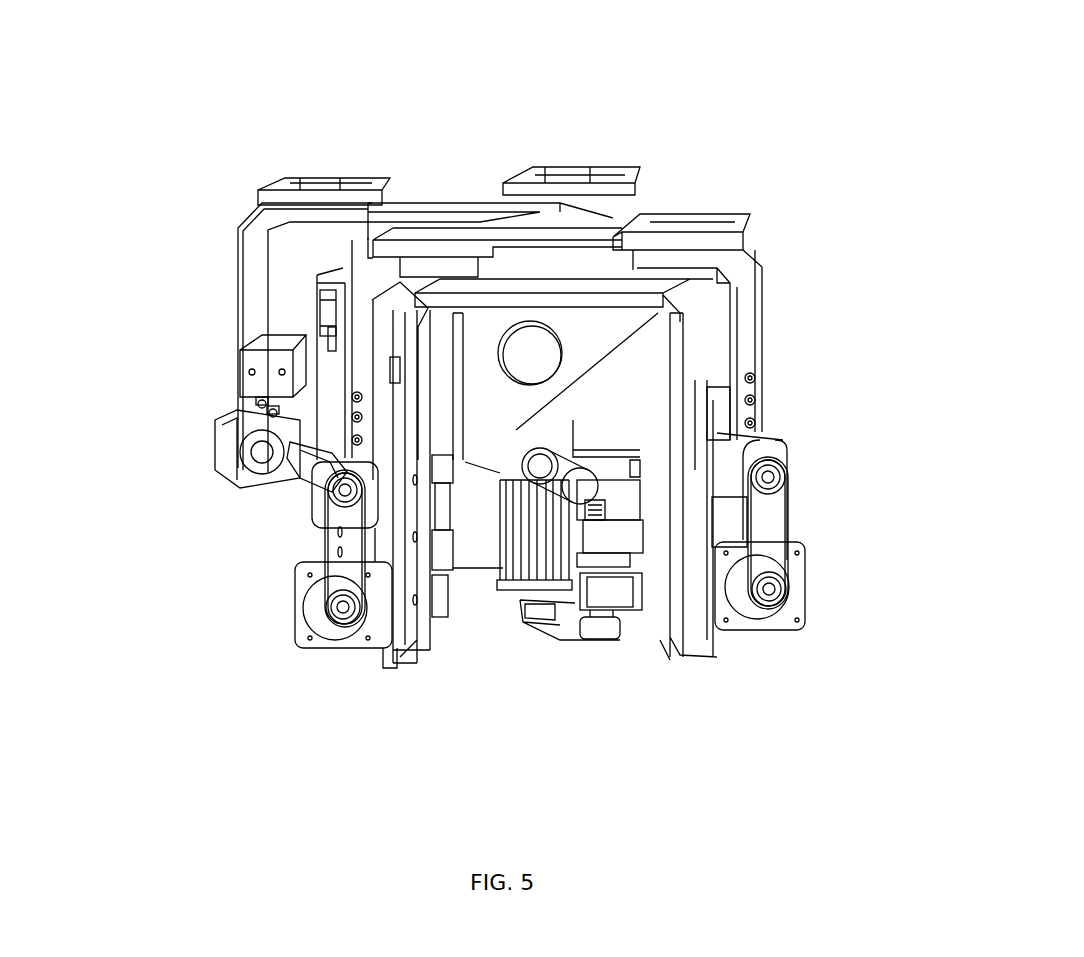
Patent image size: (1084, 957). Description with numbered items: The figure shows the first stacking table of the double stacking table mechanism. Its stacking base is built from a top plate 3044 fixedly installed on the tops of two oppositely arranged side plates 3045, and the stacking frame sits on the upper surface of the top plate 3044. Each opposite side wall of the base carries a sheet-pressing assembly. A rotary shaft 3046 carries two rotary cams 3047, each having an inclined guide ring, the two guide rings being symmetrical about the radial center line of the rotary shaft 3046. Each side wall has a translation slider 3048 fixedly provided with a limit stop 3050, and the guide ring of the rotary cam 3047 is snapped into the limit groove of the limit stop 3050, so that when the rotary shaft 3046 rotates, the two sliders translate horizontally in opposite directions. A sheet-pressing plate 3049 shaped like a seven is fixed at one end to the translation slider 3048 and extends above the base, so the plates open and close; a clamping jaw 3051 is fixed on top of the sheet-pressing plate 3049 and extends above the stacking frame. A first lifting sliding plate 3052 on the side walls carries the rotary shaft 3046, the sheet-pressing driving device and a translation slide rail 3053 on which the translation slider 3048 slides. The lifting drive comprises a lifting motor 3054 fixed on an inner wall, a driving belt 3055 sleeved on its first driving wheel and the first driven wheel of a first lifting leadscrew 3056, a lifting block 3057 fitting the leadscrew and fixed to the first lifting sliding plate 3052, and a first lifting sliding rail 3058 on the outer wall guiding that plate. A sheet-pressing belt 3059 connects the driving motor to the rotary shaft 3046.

The top plate 3044 is at (670, 292).
The side plates 3045 is at (413, 633).
The rotary shaft 3046 is at (222, 440).
The rotary cam 3047 is at (258, 487).
The translation slider 3048 is at (250, 355).
The sheet-pressing plate 3049 is at (296, 213).
The limit stop 3050 is at (252, 400).
The clamping jaw 3051 is at (664, 221).
The first lifting sliding plate 3052 is at (397, 615).
The translation slide rail 3053 is at (718, 400).
The lifting motor 3054 is at (520, 590).
The driving belt 3055 is at (553, 623).
The first lifting leadscrew 3056 is at (580, 503).
The lifting block 3057 is at (612, 542).
The first lifting sliding rail 3058 is at (322, 322).
The sheet-pressing belt 3059 is at (322, 553).